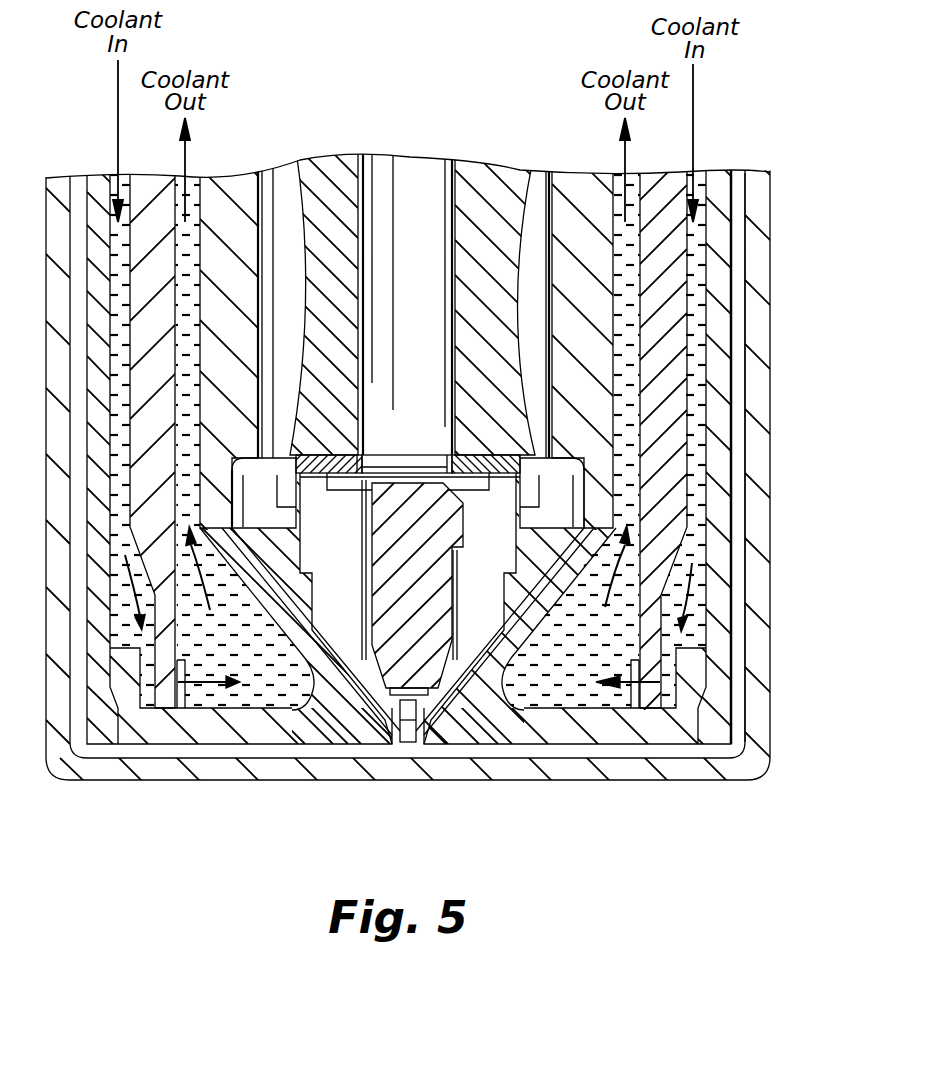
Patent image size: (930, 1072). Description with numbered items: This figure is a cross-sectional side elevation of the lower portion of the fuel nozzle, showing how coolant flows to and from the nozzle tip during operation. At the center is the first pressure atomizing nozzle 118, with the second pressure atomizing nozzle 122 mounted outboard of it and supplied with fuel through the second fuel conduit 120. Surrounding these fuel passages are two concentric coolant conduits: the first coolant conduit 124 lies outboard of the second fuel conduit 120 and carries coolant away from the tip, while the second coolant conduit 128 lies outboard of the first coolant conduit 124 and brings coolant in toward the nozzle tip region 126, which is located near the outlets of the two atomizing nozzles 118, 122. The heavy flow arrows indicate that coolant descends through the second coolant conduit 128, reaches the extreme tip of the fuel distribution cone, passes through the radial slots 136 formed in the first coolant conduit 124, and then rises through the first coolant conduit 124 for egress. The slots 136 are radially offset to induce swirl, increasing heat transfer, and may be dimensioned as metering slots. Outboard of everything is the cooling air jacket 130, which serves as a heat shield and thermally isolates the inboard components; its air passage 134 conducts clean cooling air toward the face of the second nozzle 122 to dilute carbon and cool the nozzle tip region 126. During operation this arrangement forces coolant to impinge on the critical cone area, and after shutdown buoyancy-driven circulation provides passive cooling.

The first pressure atomizing nozzle 118 is at (408, 735).
The second fuel conduit 120 is at (233, 187).
The second pressure atomizing nozzle 122 is at (377, 697).
The first coolant conduit 124 is at (148, 197).
The nozzle tip region 126 is at (466, 710).
The second coolant conduit 128 is at (93, 176).
The cooling air jacket 130 is at (762, 273).
The air passage 134 is at (763, 182).
The radial slots 136 is at (200, 697).